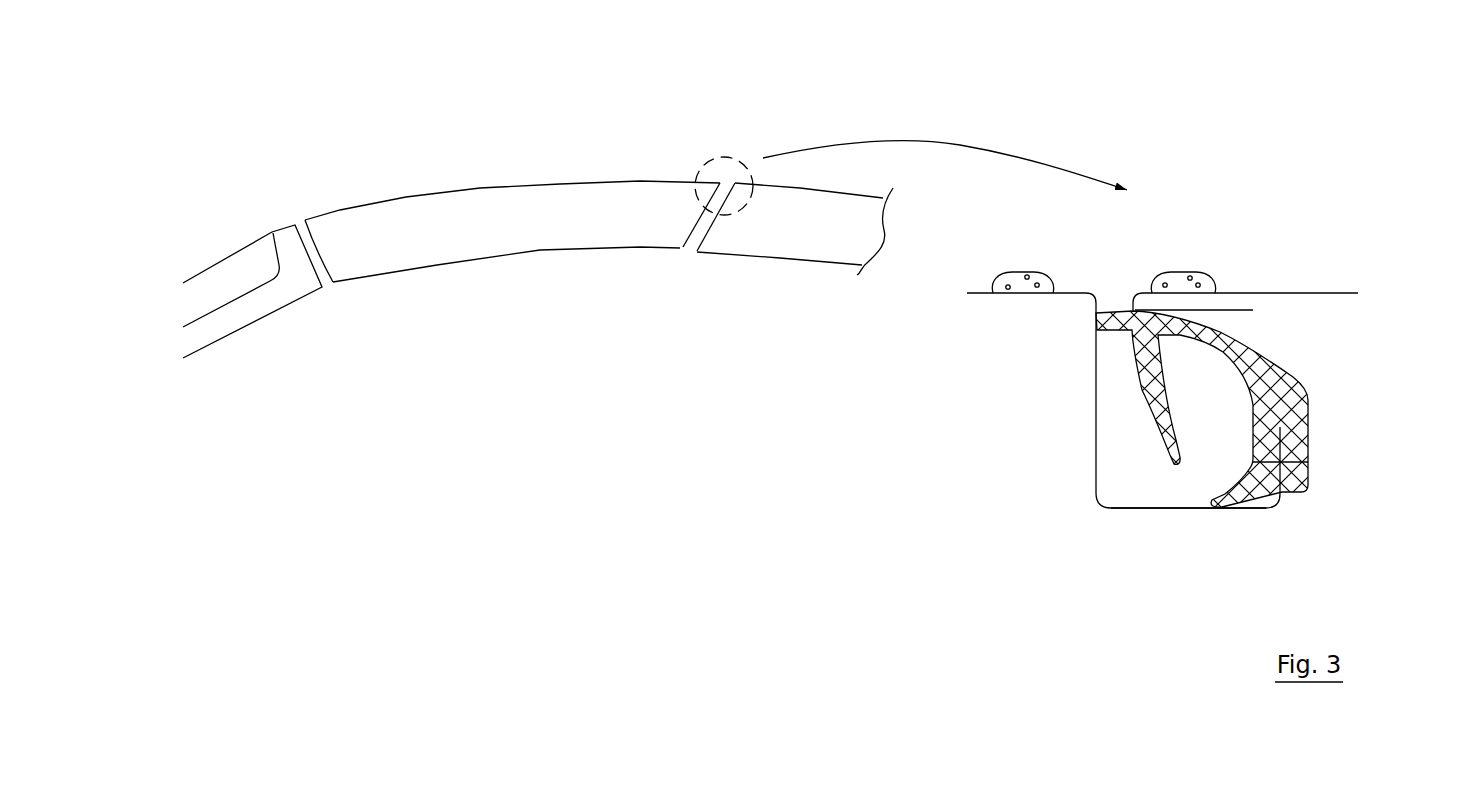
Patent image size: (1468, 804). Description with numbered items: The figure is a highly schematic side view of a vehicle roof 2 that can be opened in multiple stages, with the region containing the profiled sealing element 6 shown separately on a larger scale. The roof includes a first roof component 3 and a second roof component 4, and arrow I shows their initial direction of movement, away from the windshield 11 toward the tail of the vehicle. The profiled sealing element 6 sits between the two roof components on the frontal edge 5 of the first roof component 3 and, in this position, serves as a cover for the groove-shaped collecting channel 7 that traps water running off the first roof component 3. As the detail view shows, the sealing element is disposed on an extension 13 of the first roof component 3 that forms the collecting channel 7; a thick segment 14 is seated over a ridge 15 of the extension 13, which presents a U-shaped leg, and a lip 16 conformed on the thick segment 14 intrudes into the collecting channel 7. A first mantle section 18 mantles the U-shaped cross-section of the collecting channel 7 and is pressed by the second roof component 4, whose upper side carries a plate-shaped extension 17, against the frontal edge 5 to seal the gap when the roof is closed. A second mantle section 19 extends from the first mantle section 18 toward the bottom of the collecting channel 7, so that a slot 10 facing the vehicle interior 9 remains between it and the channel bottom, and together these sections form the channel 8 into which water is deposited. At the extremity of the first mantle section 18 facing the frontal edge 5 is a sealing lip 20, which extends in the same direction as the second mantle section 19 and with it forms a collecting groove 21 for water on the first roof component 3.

The vehicle roof 2 is at (523, 183).
The first roof component 3 is at (408, 222).
The second roof component 4 is at (797, 233).
The frontal edge 5 is at (698, 247).
The profiled sealing element 6 is at (1308, 377).
The collecting channel 7 is at (1136, 441).
The channel 8 is at (1218, 408).
The vehicle interior 9 is at (1310, 567).
The slot 10 is at (1203, 480).
The windshield 11 is at (215, 283).
The extension 13 is at (1143, 509).
The thick segment 14 is at (1293, 452).
The ridge 15 is at (1308, 462).
The lip 16 is at (1223, 503).
The plate-shaped extension 17 is at (1218, 303).
The first mantle section 18 is at (1203, 338).
The second mantle section 19 is at (1150, 382).
The sealing lip 20 is at (1103, 337).
The collecting groove 21 is at (1120, 338).
The arrow I is at (917, 140).